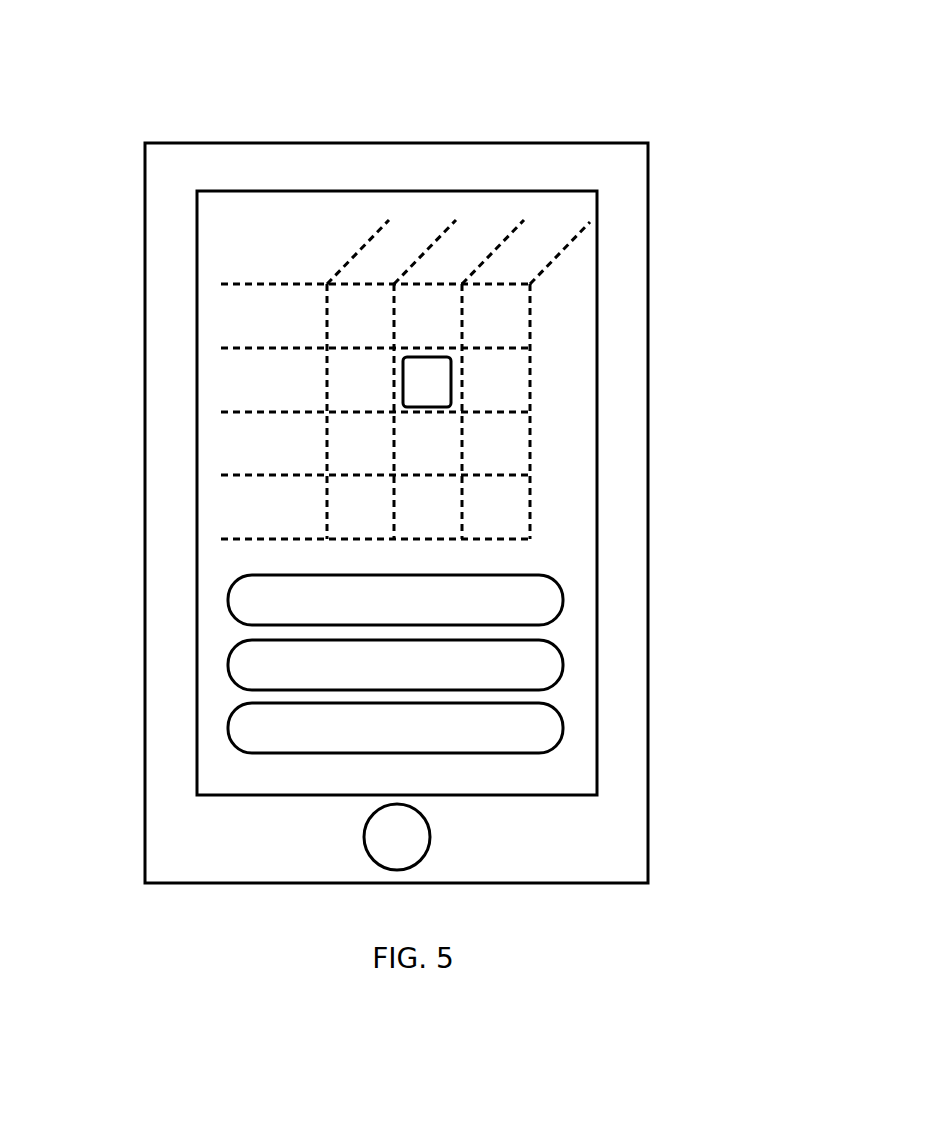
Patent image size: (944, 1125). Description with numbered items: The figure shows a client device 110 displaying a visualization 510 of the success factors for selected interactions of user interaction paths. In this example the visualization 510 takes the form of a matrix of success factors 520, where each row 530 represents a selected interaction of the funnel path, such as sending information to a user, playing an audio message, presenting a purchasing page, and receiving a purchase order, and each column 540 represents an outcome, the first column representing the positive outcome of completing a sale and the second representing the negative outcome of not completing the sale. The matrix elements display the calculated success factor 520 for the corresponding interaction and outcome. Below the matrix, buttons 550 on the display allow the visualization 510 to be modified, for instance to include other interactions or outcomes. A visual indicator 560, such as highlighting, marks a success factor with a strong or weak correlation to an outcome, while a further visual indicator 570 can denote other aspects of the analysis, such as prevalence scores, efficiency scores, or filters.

The client device 110 is at (548, 140).
The visualization 510 is at (288, 186).
The success factors 520 is at (454, 507).
The row 530 is at (227, 378).
The column 540 is at (479, 222).
The buttons 550 is at (501, 666).
The visual indicators 560 is at (459, 362).
The visual indicators 570 is at (516, 311).